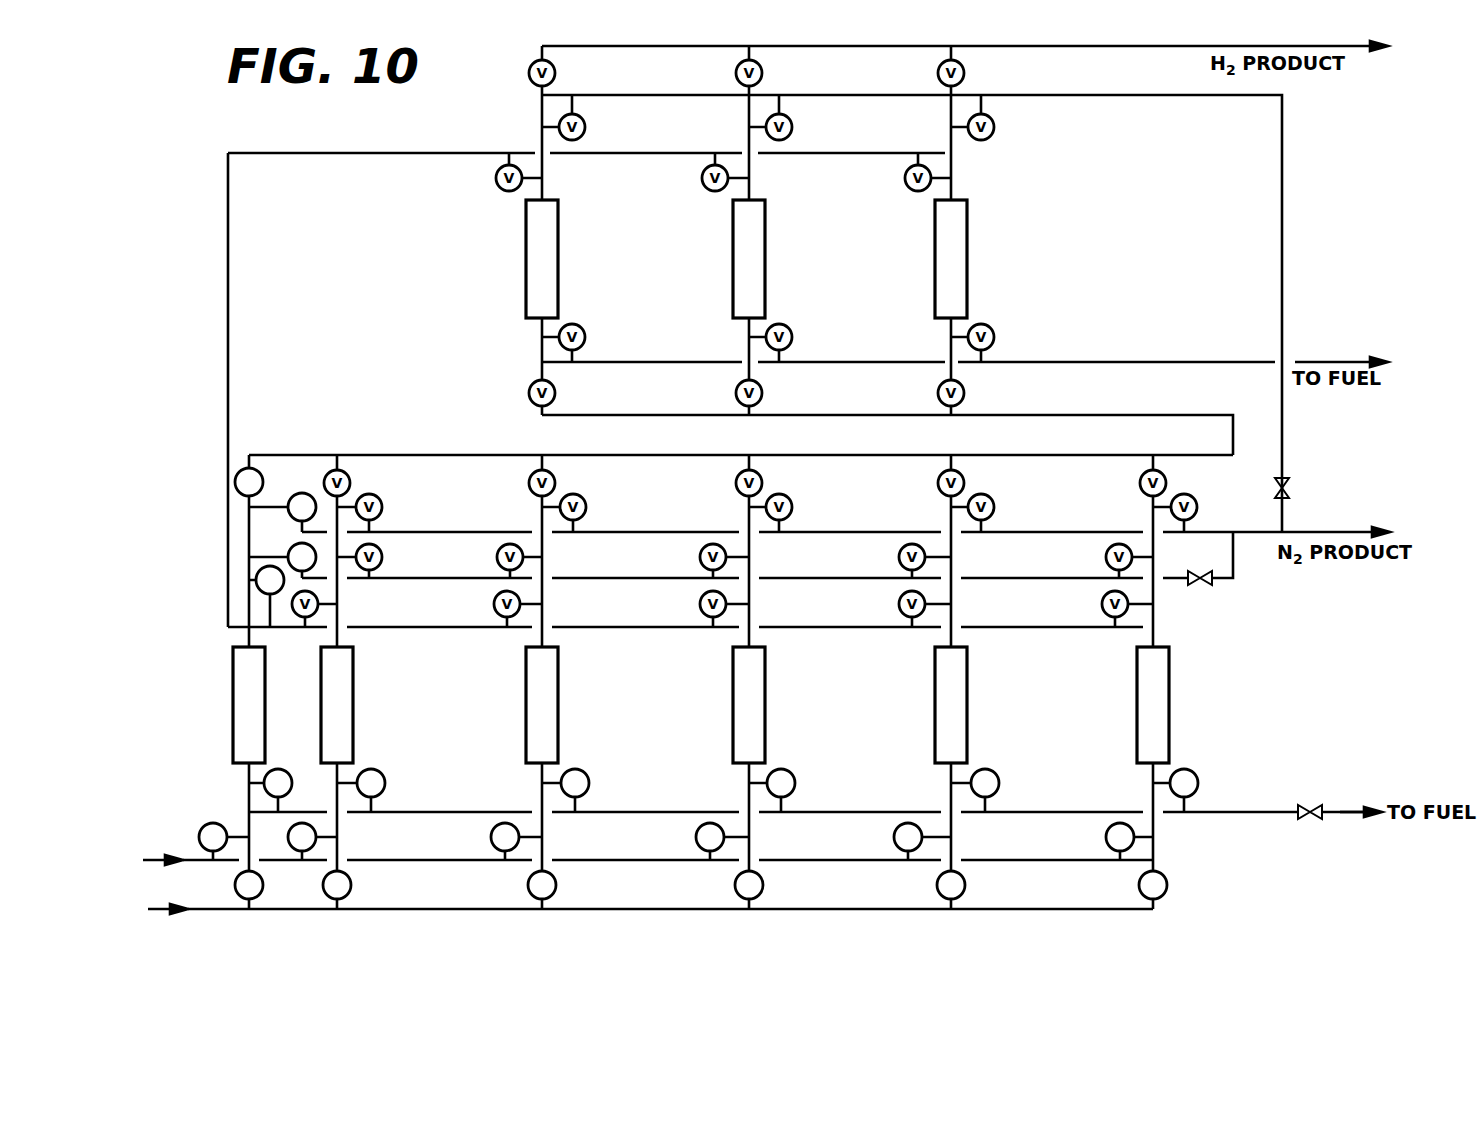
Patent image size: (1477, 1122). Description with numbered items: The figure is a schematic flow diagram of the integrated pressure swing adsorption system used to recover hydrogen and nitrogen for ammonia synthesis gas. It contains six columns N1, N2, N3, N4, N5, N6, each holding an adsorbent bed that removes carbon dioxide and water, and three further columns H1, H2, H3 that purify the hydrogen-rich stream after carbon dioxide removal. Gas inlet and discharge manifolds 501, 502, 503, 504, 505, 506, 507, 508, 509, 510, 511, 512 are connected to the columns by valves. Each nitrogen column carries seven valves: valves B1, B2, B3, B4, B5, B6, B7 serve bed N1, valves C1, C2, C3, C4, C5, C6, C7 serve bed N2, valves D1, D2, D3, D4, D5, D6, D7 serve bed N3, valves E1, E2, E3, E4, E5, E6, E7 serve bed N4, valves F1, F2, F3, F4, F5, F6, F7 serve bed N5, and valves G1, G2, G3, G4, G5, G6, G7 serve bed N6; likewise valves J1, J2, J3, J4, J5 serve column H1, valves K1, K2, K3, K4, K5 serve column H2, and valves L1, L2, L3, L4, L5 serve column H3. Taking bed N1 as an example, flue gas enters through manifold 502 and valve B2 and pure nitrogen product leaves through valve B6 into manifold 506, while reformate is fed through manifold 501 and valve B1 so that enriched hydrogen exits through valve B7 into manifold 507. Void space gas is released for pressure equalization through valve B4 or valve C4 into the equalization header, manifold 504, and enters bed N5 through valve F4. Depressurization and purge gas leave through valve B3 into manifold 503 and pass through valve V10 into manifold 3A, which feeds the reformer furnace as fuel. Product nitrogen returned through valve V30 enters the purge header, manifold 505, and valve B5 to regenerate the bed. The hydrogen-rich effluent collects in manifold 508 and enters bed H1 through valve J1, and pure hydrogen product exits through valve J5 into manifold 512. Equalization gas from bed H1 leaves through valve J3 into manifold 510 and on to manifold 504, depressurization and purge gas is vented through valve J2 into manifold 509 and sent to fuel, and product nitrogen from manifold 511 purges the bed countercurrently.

The manifold 501 is at (186, 905).
The manifold 502 is at (186, 858).
The manifold 503 is at (422, 812).
The manifold 504 is at (392, 630).
The manifold 505 is at (426, 578).
The manifold 506 is at (448, 532).
The manifold 507 is at (385, 455).
The manifold 508 is at (1076, 413).
The manifold 509 is at (1158, 360).
The manifold 510 is at (366, 155).
The manifold 511 is at (1097, 98).
The manifold 512 is at (1098, 49).
The adsorbent column H1 is at (558, 257).
The adsorbent column H2 is at (765, 257).
The adsorbent column H3 is at (967, 257).
The column N1 is at (233, 710).
The column N2 is at (353, 700).
The column N3 is at (558, 700).
The column N4 is at (765, 700).
The column N5 is at (967, 700).
The column N6 is at (1169, 700).
The valve J1 is at (556, 393).
The valve J2 is at (586, 337).
The valve J3 is at (494, 178).
The valve J4 is at (586, 127).
The valve J5 is at (556, 73).
The valve K1 is at (763, 393).
The valve K2 is at (793, 337).
The valve K3 is at (700, 178).
The valve K4 is at (793, 127).
The valve K5 is at (763, 73).
The valve L1 is at (965, 393).
The valve L2 is at (995, 337).
The valve L3 is at (904, 178).
The valve L4 is at (995, 127).
The valve L5 is at (965, 73).
The valve B1 is at (274, 892).
The valve B2 is at (213, 831).
The valve B3 is at (300, 767).
The valve B4 is at (258, 589).
The valve B5 is at (294, 550).
The valve B6 is at (294, 517).
The valve B7 is at (243, 470).
The valve C1 is at (352, 885).
The valve C2 is at (290, 836).
The valve C3 is at (383, 775).
The valve C4 is at (296, 617).
The valve C5 is at (383, 557).
The valve C6 is at (383, 507).
The valve C7 is at (323, 483).
The valve D1 is at (557, 885).
The valve D2 is at (492, 835).
The valve D3 is at (587, 775).
The valve D4 is at (493, 604).
The valve D5 is at (496, 557).
The valve D6 is at (587, 507).
The valve D7 is at (529, 483).
The valve E1 is at (764, 885).
The valve E2 is at (694, 835).
The valve E3 is at (795, 785).
The valve E4 is at (700, 604).
The valve E5 is at (700, 557).
The valve E6 is at (793, 507).
The valve E7 is at (763, 480).
The valve F1 is at (966, 885).
The valve F2 is at (895, 835).
The valve F3 is at (999, 787).
The valve F4 is at (898, 604).
The valve F5 is at (898, 557).
The valve F6 is at (995, 507).
The valve F7 is at (965, 480).
The valve G1 is at (1168, 885).
The valve G2 is at (1106, 835).
The valve G3 is at (1198, 787).
The valve G4 is at (1102, 604).
The valve G5 is at (1106, 557).
The valve G6 is at (1198, 507).
The valve G7 is at (1167, 480).
The valve V30 is at (1192, 588).
The valve V10 is at (1305, 822).
The manifold 3A is at (1346, 807).